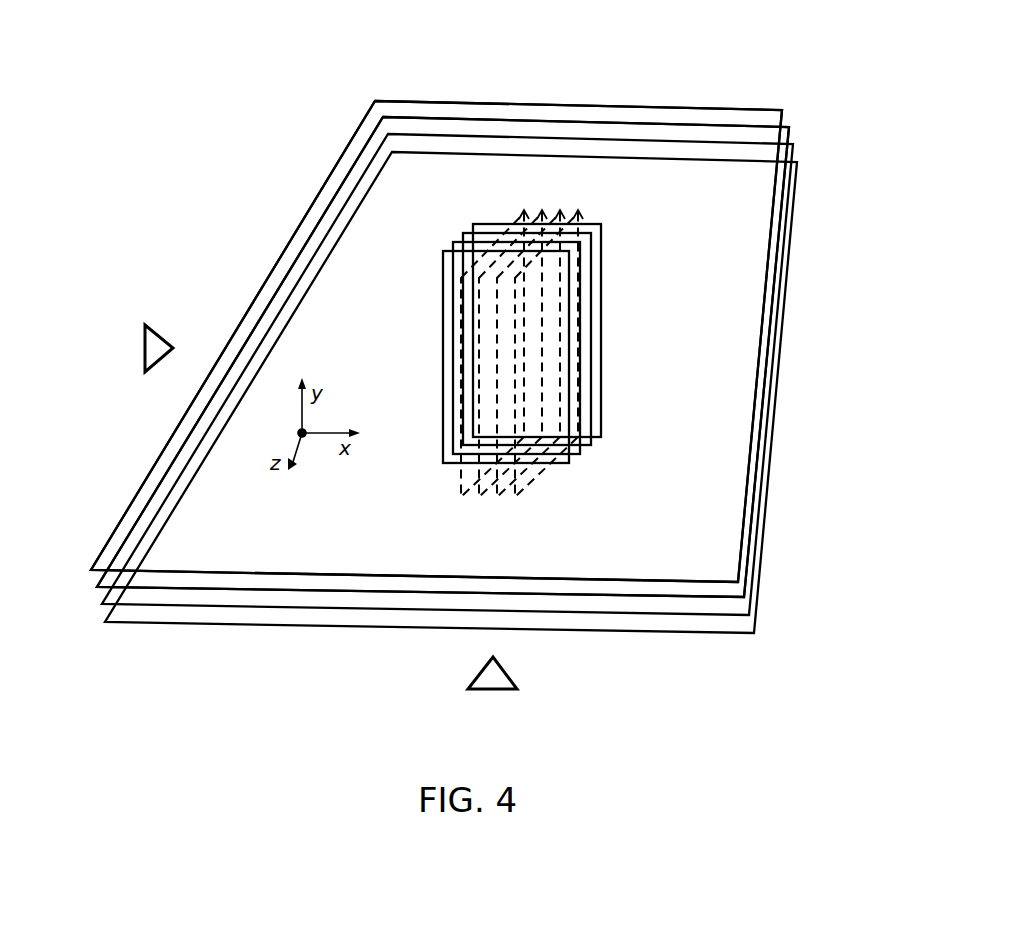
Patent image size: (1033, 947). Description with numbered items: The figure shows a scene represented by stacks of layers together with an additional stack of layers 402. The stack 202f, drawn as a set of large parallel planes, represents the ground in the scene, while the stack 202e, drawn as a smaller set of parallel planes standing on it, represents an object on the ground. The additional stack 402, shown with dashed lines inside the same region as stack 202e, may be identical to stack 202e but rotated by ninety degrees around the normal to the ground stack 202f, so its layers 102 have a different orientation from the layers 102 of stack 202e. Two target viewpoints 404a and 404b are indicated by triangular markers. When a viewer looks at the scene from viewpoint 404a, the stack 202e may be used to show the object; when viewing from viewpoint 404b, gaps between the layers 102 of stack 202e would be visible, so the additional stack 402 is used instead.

The layers 102 is at (372, 108).
The stack of layers 202f is at (700, 100).
The stack of layers 202e is at (610, 315).
The additional stack of layers 402 is at (542, 487).
The target viewpoint 404a is at (474, 674).
The target viewpoint 404b is at (140, 350).